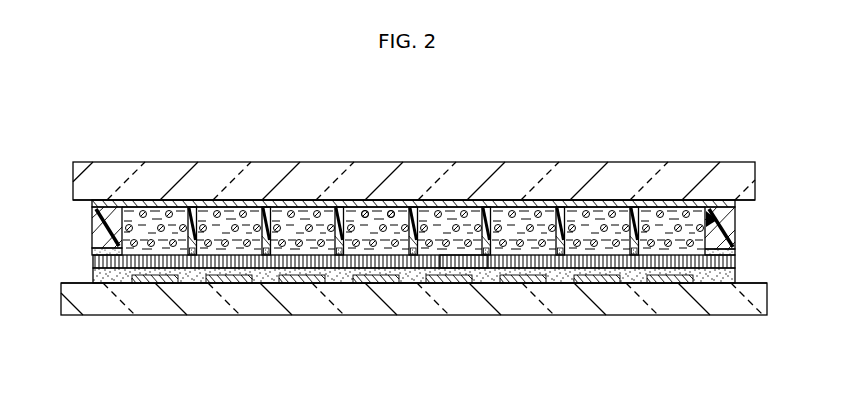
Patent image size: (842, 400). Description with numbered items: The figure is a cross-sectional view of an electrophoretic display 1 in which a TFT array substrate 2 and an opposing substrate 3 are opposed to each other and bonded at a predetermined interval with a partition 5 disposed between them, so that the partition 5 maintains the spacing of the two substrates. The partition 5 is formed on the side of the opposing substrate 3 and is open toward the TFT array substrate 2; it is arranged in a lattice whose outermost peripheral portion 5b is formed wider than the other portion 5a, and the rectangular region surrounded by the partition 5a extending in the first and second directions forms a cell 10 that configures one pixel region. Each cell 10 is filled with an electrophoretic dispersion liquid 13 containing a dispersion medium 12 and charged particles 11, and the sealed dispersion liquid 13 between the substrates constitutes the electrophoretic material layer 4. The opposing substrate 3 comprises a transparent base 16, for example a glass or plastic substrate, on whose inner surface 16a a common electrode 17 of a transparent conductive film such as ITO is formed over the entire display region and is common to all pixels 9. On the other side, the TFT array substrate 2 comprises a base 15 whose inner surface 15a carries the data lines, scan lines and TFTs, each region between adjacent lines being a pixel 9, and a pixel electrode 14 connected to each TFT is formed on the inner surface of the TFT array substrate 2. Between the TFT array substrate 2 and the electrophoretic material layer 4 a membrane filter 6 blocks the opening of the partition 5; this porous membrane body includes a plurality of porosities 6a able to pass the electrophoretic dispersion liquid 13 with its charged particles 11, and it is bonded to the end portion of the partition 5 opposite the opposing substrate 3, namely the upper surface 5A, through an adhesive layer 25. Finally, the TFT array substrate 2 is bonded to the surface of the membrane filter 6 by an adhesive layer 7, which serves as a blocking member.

The electrophoretic display 1 is at (705, 95).
The TFT array substrate 2 is at (695, 340).
The opposing substrate 3 is at (648, 140).
The electrophoretic material layer 4 is at (736, 229).
The partition 5 is at (193, 206).
The partition portion 5a is at (192, 231).
The outermost peripheral portion of the partition 5b is at (91, 231).
The upper surface of the partition 5A is at (97, 278).
The membrane filter 6 is at (92, 262).
The porosities 6a is at (463, 258).
The adhesive layer 7 is at (736, 277).
The pixel 9 is at (152, 204).
The cell 10 is at (250, 204).
The charged particles 11 is at (389, 211).
The dispersion medium 12 is at (367, 211).
The electrophoretic dispersion liquid 13 is at (405, 121).
The pixel electrode 14 is at (587, 281).
The base of the TFT array substrate 15 is at (768, 300).
The inner surface of the base 15a is at (75, 276).
The base of the opposing substrate 16 is at (746, 172).
The inner surface of the base of the opposing substrate 16a is at (752, 200).
The common electrode 17 is at (91, 204).
The adhesive layer 25 is at (736, 253).